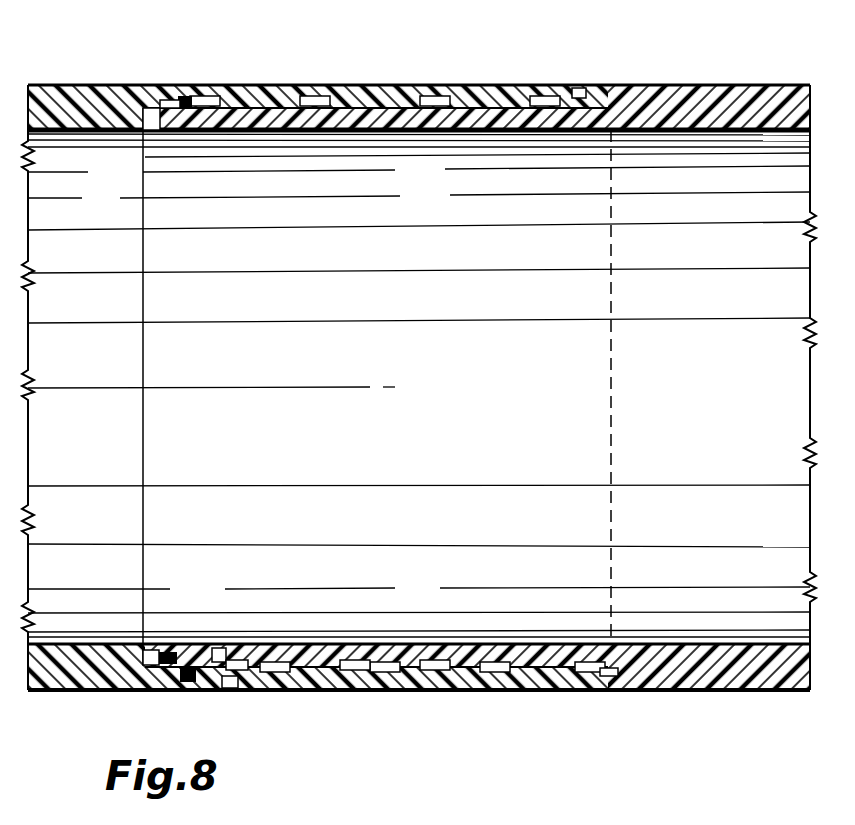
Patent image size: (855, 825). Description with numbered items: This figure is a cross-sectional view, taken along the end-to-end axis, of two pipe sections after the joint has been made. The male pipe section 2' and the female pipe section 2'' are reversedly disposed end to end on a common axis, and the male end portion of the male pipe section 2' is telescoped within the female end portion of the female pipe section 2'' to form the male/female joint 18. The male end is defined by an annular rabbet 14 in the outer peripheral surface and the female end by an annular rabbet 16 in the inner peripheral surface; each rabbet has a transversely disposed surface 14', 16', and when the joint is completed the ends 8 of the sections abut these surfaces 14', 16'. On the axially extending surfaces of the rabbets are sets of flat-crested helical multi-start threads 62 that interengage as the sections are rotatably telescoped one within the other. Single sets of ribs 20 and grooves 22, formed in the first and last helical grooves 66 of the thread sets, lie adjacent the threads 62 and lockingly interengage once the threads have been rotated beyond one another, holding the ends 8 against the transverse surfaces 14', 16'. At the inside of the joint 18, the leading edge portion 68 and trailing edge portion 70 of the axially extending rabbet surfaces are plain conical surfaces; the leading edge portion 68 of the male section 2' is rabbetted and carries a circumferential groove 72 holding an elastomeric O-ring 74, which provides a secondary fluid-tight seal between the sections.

The male pipe section 2' is at (735, 734).
The female pipe section 2'' is at (74, 733).
The end 8 is at (147, 642).
The rabbet 14 is at (419, 701).
The transversely disposed surface 14' is at (419, 72).
The rabbet 16 is at (419, 382).
The transversely disposed surface 16' is at (126, 386).
The male/female joint 18 is at (574, 82).
The ribs 20 is at (223, 638).
The grooves 22 is at (240, 686).
The helical multi-start threads 62 is at (428, 665).
The first and last helical grooves 66 is at (237, 664).
The leading edge portion 68 is at (192, 100).
The trailing edge portion 70 is at (186, 666).
The circumferential groove 72 is at (182, 105).
The elastomeric O-ring 74 is at (167, 655).